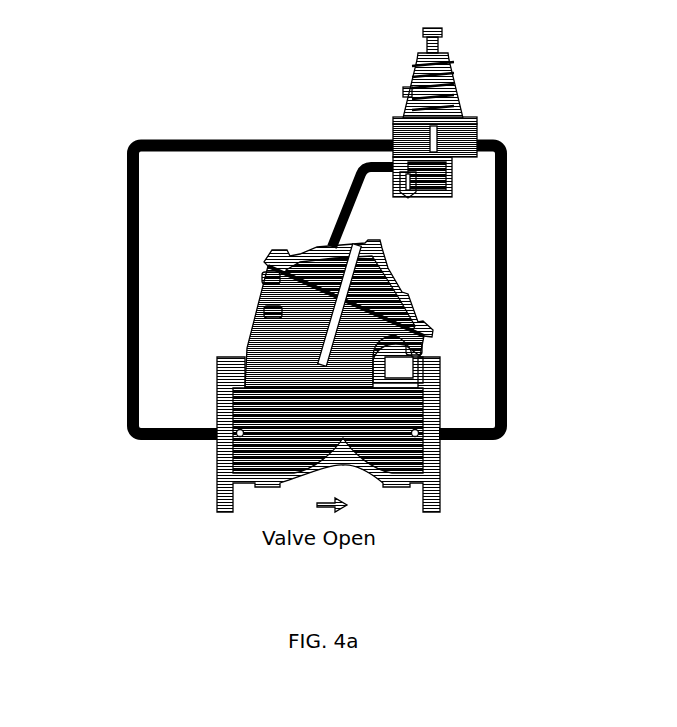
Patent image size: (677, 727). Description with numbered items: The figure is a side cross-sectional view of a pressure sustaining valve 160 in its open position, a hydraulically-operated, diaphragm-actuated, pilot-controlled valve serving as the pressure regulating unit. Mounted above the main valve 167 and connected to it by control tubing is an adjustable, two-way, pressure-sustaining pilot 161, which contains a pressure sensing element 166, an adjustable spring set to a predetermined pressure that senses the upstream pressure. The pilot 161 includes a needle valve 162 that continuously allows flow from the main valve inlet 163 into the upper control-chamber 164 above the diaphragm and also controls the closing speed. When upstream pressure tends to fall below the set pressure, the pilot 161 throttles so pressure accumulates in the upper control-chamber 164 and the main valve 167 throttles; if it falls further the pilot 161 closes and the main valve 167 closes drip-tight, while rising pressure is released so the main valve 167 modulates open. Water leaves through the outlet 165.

The pressure sustaining valve 160 is at (545, 133).
The pilot 161 is at (405, 88).
The needle valve 162 is at (397, 185).
The main valve inlet 163 is at (217, 455).
The upper control-chamber 164 is at (385, 287).
The outlet 165 is at (439, 457).
The pressure sensing element 166 is at (460, 80).
The main valve 167 is at (393, 392).